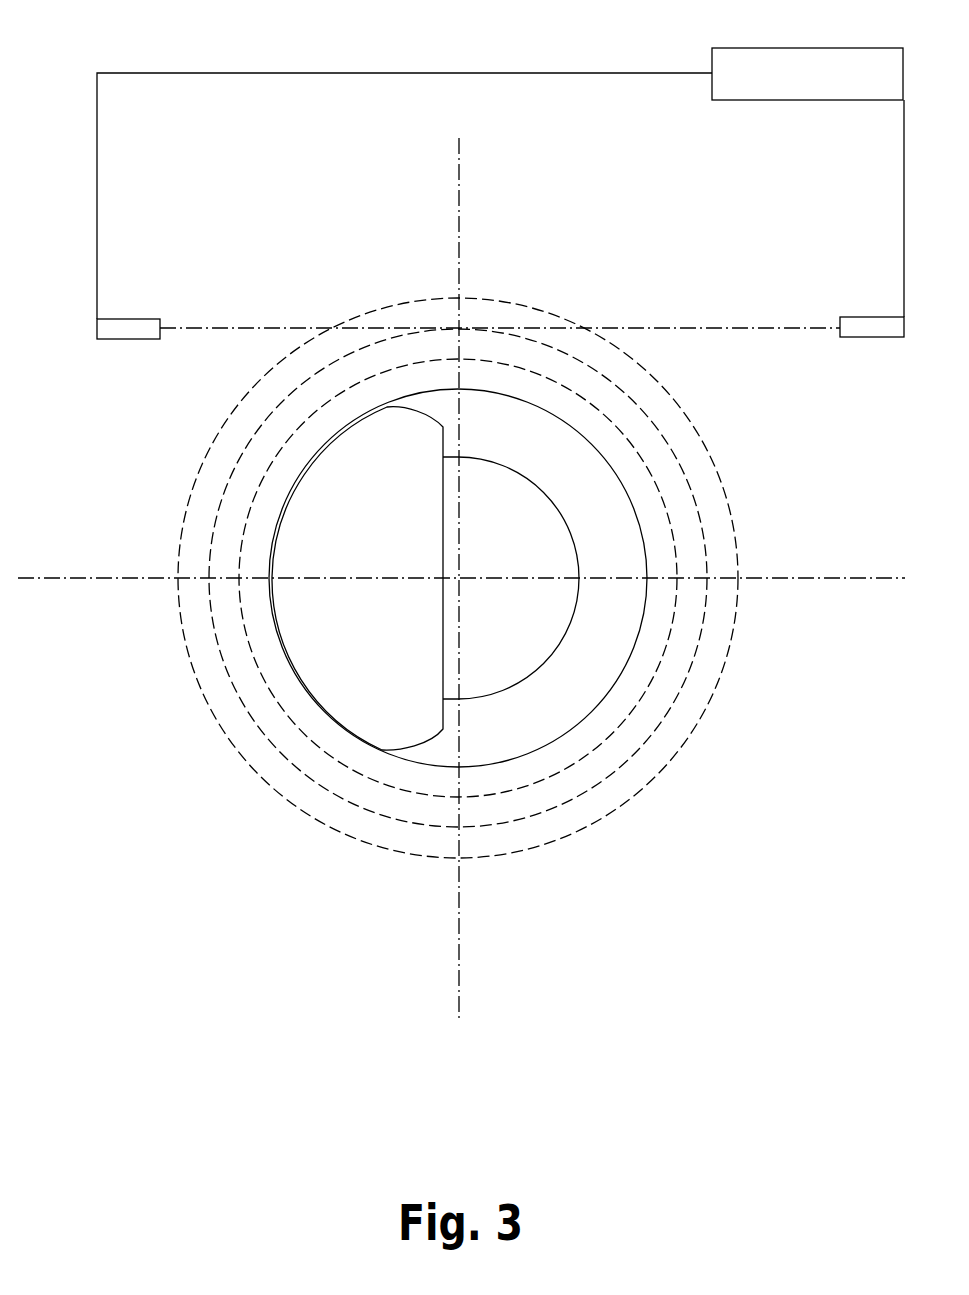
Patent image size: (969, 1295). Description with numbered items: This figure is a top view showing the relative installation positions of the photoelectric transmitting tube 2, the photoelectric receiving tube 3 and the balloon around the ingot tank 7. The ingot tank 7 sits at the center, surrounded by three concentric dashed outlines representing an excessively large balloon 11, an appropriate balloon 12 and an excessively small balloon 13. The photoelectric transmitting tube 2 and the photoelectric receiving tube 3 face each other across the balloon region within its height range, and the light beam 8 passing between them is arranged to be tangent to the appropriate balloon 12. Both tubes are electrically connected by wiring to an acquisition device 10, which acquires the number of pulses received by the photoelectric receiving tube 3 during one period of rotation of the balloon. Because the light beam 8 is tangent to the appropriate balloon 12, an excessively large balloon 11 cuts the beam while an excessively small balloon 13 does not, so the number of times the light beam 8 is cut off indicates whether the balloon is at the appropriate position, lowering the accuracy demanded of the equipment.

The acquisition device 10 is at (807, 53).
The photoelectric receiving tube 3 is at (137, 330).
The photoelectric transmitting tube 2 is at (848, 320).
The light beam 8 is at (733, 326).
The excessively large balloon 11 is at (715, 463).
The appropriate balloon 12 is at (700, 510).
The excessively small balloon 13 is at (677, 563).
The ingot tank 7 is at (610, 648).